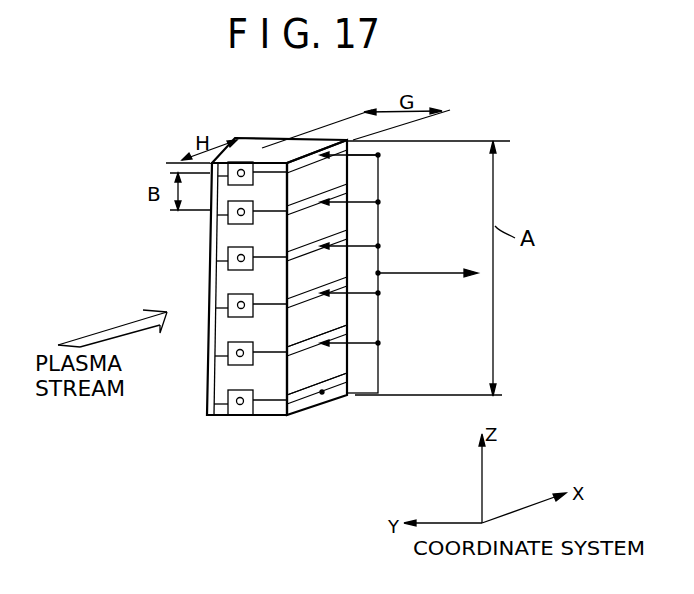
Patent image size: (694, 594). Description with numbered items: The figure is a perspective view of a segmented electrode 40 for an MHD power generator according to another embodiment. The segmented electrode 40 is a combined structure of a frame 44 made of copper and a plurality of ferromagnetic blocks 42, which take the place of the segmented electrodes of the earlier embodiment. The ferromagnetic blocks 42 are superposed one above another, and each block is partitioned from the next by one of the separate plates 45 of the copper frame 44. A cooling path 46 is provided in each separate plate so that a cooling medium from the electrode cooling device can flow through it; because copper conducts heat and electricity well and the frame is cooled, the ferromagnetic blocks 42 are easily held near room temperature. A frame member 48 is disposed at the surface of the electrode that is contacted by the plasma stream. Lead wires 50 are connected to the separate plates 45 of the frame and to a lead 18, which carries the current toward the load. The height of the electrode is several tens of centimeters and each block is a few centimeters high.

The segmented electrode 40 is at (280, 133).
The lead 18 is at (418, 270).
The lead wires 50 is at (380, 315).
The separate plates 45 is at (307, 348).
The ferromagnetic blocks 42 is at (305, 374).
The cooling path 46 is at (241, 356).
The frame 44 is at (220, 405).
The frame member 48 is at (212, 340).